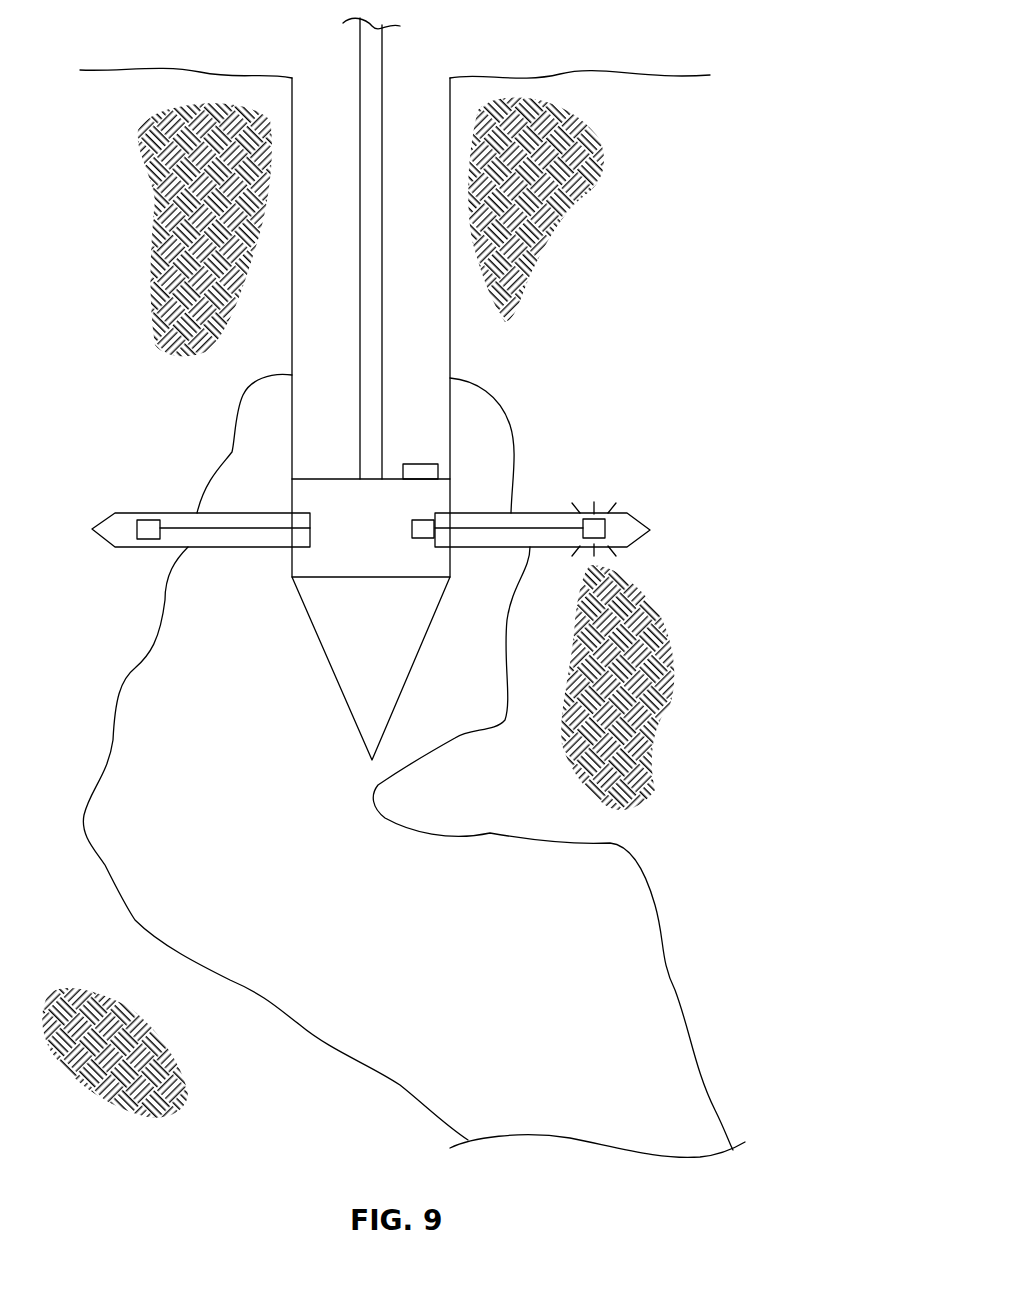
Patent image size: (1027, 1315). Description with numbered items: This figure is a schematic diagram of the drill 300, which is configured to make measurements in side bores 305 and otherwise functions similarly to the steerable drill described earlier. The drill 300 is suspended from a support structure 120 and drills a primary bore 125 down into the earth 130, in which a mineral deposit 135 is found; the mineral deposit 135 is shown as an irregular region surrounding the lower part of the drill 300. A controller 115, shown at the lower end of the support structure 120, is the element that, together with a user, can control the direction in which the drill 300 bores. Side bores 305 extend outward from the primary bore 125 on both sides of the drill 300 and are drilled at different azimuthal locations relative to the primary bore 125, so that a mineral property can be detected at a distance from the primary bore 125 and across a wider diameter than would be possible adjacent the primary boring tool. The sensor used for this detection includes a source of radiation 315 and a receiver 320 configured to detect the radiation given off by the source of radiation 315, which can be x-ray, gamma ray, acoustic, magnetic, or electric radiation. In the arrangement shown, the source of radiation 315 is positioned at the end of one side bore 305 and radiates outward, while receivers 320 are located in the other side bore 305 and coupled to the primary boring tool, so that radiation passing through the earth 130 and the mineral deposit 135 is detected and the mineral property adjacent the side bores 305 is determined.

The controller 115 is at (421, 464).
The support structure 120 is at (372, 143).
The bore 125 is at (447, 98).
The earth 130 is at (544, 87).
The mineral deposit 135 is at (110, 790).
The drill 300 is at (316, 735).
The side bores 305 is at (265, 518).
The source of radiation 315 is at (607, 528).
The receiver 320 is at (148, 520).